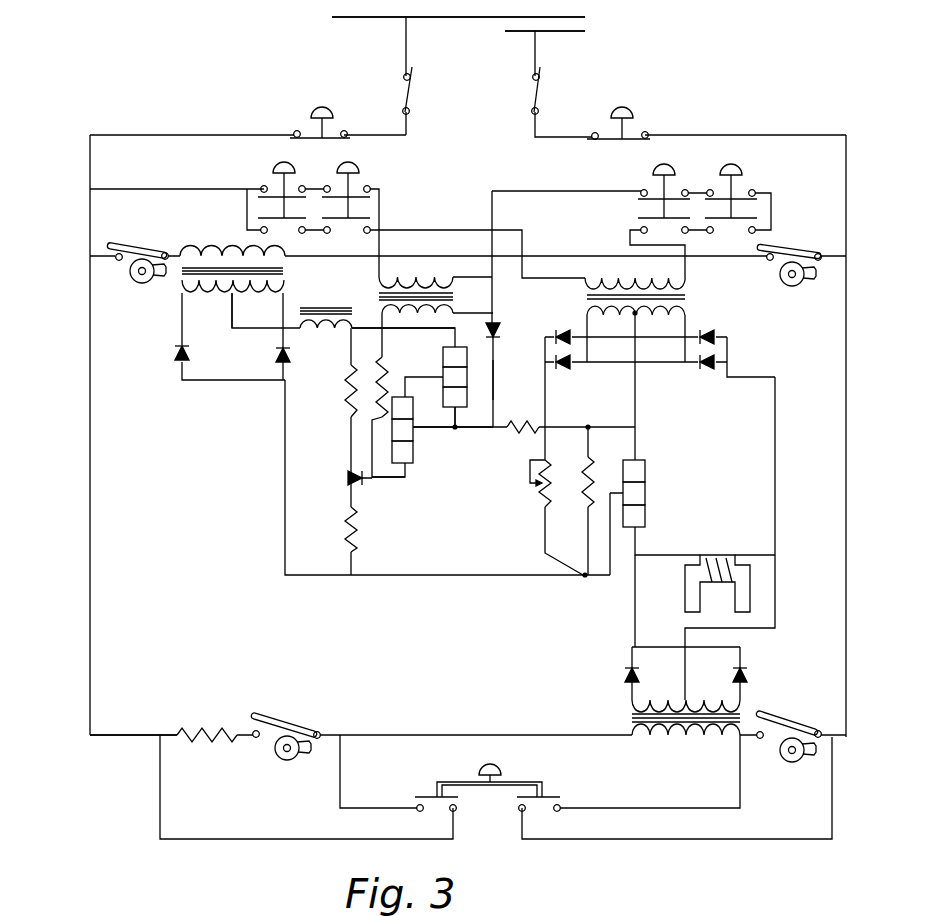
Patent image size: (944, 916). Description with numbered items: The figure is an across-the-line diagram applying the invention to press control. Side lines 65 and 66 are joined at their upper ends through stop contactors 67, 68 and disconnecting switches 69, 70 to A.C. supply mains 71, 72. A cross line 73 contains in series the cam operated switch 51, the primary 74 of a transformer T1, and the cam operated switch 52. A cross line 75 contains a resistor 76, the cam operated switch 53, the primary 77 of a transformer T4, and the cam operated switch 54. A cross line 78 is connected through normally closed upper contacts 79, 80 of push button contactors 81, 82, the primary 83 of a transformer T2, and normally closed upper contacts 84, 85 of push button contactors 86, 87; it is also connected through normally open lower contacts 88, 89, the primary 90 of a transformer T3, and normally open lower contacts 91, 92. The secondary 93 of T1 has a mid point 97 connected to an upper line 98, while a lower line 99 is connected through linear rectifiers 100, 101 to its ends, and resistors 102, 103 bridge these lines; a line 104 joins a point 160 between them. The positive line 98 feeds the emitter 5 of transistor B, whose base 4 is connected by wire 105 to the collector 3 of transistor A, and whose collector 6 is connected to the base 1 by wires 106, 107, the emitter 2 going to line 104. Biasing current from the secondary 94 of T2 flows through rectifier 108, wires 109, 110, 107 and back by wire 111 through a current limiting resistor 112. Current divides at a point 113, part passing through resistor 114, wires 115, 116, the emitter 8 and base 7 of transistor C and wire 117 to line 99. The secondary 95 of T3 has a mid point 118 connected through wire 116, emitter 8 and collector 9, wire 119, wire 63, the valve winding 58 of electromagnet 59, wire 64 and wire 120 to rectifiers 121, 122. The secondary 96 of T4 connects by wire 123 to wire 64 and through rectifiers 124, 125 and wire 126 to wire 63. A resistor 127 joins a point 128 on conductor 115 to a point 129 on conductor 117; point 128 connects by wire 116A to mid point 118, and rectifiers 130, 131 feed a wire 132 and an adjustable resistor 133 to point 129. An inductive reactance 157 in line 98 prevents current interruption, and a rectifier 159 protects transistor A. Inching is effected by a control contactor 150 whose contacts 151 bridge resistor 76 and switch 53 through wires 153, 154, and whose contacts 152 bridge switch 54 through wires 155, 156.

The A.C. supply main 71 is at (502, 17).
The A.C. supply main 72 is at (521, 32).
The disconnecting switch 69 is at (404, 90).
The disconnecting switch 70 is at (531, 91).
The stop contactor 67 is at (306, 130).
The stop contactor 68 is at (608, 134).
The cross line 78 is at (107, 190).
The normally closed upper contact 79 is at (270, 190).
The normally closed upper contact 80 is at (336, 190).
The push button contactor 81 is at (283, 182).
The push button contactor 82 is at (348, 182).
The normally open lower contact 88 is at (285, 233).
The normally open lower contact 89 is at (350, 233).
The normally closed upper contact 84 is at (652, 190).
The normally closed upper contact 85 is at (716, 190).
The push button contactor 86 is at (664, 182).
The push button contactor 87 is at (732, 182).
The normally open lower contact 91 is at (640, 230).
The normally open lower contact 92 is at (733, 233).
The cross line 73 is at (100, 250).
The cam operated switch 51 is at (160, 252).
The cam operated switch 52 is at (800, 250).
The primary 74 is at (205, 256).
The transformer T1 is at (285, 273).
The secondary 93 is at (286, 286).
The mid point 97 is at (230, 290).
The linear rectifier 100 is at (190, 354).
The linear rectifier 101 is at (275, 354).
The inductive reactance 157 is at (330, 332).
The primary 83 is at (424, 284).
The transformer T2 is at (455, 297).
The secondary 94 is at (455, 310).
The upper line 98 is at (414, 330).
The linear rectifier 108 is at (500, 331).
The wire 109 is at (496, 378).
The current limiting resistor 112 is at (378, 360).
The resistor 102 is at (345, 400).
The resistor 103 is at (345, 537).
The wire 111 is at (372, 455).
The base 1 is at (390, 431).
The emitter 2 is at (390, 453).
The collector 3 is at (415, 408).
The wire 105 is at (432, 377).
The emitter 5 is at (468, 357).
The base 4 is at (468, 377).
The collector 6 is at (468, 397).
The wire 106 is at (457, 425).
The wire 107 is at (422, 431).
The wire 110 is at (462, 431).
The point 113 is at (455, 431).
The point 160 is at (346, 478).
The rectifier 159 is at (355, 482).
The line 104 is at (393, 480).
The lower line 99 is at (373, 577).
The side line 65 is at (92, 482).
The resistor 114 is at (518, 425).
The point 128 is at (582, 425).
The wire 115 is at (604, 426).
The wire 132 is at (543, 446).
The adjustable resistor 133 is at (543, 511).
The resistor 127 is at (585, 508).
The point 129 is at (577, 578).
The linear rectifier 130 is at (561, 333).
The linear rectifier 131 is at (567, 368).
The linear rectifier 122 is at (709, 333).
The linear rectifier 121 is at (710, 369).
The primary 90 is at (608, 284).
The transformer T3 is at (690, 297).
The secondary 95 is at (690, 309).
The mid point 118 is at (633, 314).
The wire 116A is at (637, 395).
The wire 116 is at (637, 437).
The wire 119 is at (638, 540).
The emitter 8 is at (647, 472).
The base 7 is at (647, 493).
The collector 9 is at (647, 515).
The wire 117 is at (616, 562).
The electromagnet 59 is at (683, 592).
The winding 58 is at (716, 556).
The wire 63 is at (676, 552).
The wire 64 is at (755, 552).
The wire 120 is at (777, 520).
The wire 123 is at (775, 632).
The wire 126 is at (630, 628).
The side line 66 is at (845, 445).
The linear rectifier 125 is at (624, 673).
The linear rectifier 124 is at (748, 673).
The secondary 96 is at (745, 700).
The transformer T4 is at (630, 717).
The primary 77 is at (674, 738).
The cam operated switch 54 is at (799, 718).
The cam operated switch 53 is at (289, 716).
The cross line 75 is at (113, 733).
The resistor 76 is at (199, 729).
The wire 153 is at (341, 758).
The wire 154 is at (162, 793).
The control contactor 150 is at (509, 782).
The normally open contact 151 is at (430, 814).
The normally open contact 152 is at (538, 812).
The wire 155 is at (646, 807).
The wire 156 is at (768, 838).